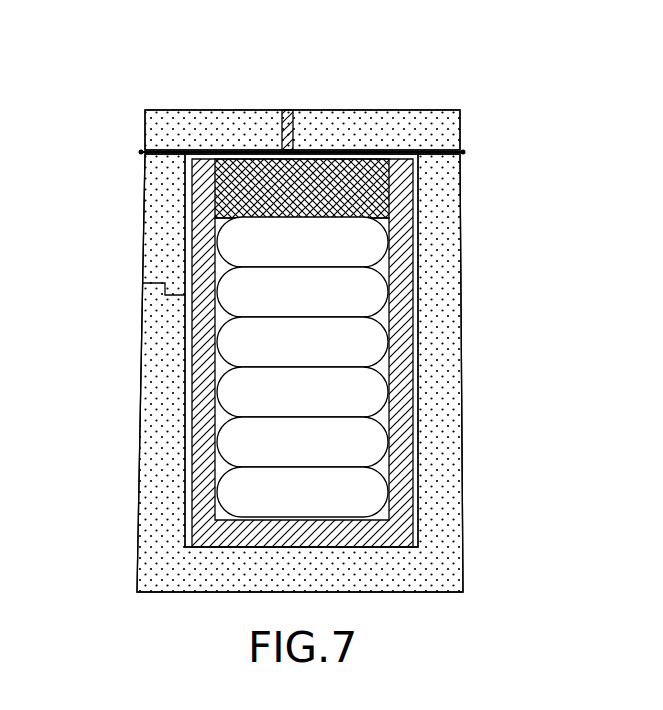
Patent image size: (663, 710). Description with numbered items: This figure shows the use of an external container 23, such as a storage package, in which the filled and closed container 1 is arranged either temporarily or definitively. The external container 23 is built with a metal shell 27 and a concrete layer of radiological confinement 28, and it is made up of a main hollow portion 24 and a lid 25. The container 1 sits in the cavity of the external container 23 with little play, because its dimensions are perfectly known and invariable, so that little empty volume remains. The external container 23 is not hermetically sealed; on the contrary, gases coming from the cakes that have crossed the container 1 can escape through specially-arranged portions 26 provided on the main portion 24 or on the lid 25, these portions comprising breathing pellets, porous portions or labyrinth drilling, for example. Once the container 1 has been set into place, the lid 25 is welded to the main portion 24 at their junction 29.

The container 1 is at (417, 462).
The external container 23 is at (300, 302).
The main hollow portion 24 is at (468, 366).
The lid 25 is at (357, 106).
The specially-arranged portions 26 is at (288, 108).
The metal shell 27 is at (162, 108).
The concrete layer of radiological confinement 28 is at (207, 125).
The junction 29 is at (463, 152).